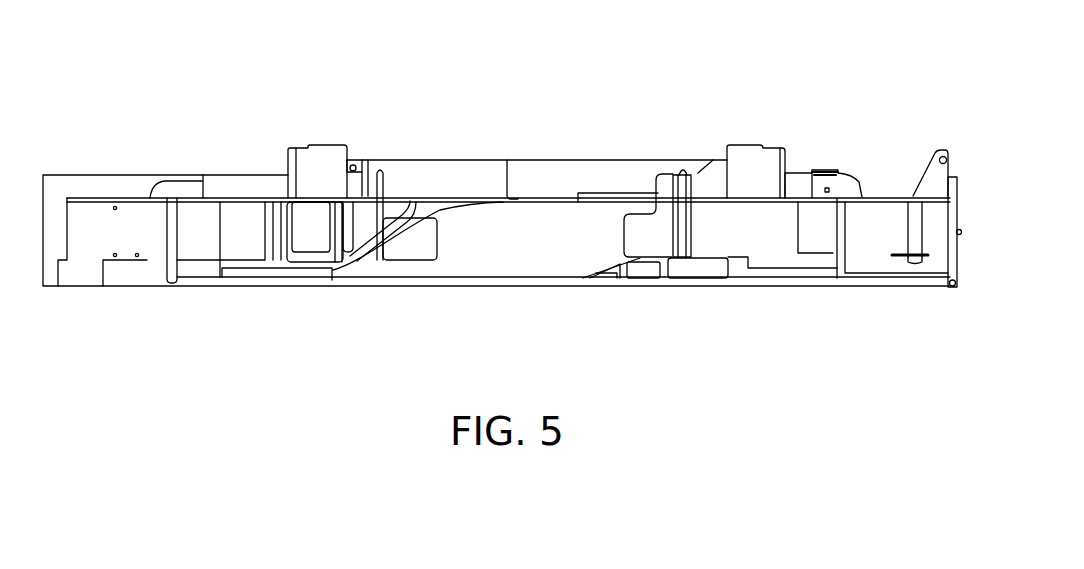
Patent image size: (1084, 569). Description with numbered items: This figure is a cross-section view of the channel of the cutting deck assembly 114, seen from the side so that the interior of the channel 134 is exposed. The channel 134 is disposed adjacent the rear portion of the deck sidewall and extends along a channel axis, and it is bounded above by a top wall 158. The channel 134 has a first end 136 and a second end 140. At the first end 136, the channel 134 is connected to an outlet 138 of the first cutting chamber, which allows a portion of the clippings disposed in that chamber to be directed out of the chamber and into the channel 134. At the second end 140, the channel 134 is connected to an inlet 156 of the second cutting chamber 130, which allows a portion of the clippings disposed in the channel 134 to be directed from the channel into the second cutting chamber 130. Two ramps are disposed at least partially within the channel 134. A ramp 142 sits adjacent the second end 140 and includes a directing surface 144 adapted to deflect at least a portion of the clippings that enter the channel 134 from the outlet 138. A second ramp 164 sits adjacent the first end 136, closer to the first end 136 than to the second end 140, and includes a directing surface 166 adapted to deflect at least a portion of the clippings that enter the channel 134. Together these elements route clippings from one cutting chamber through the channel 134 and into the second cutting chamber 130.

The cutting deck assembly 114 is at (857, 65).
The second cutting chamber 130 is at (163, 263).
The channel 134 is at (505, 262).
The first end 136 is at (677, 253).
The outlet 138 is at (752, 205).
The second end 140 is at (326, 280).
The ramp 142 is at (401, 204).
The directing surface 144 is at (438, 221).
The inlet 156 is at (306, 204).
The top wall 158 is at (527, 192).
The second ramp 164 is at (617, 293).
The directing surface 166 is at (626, 256).